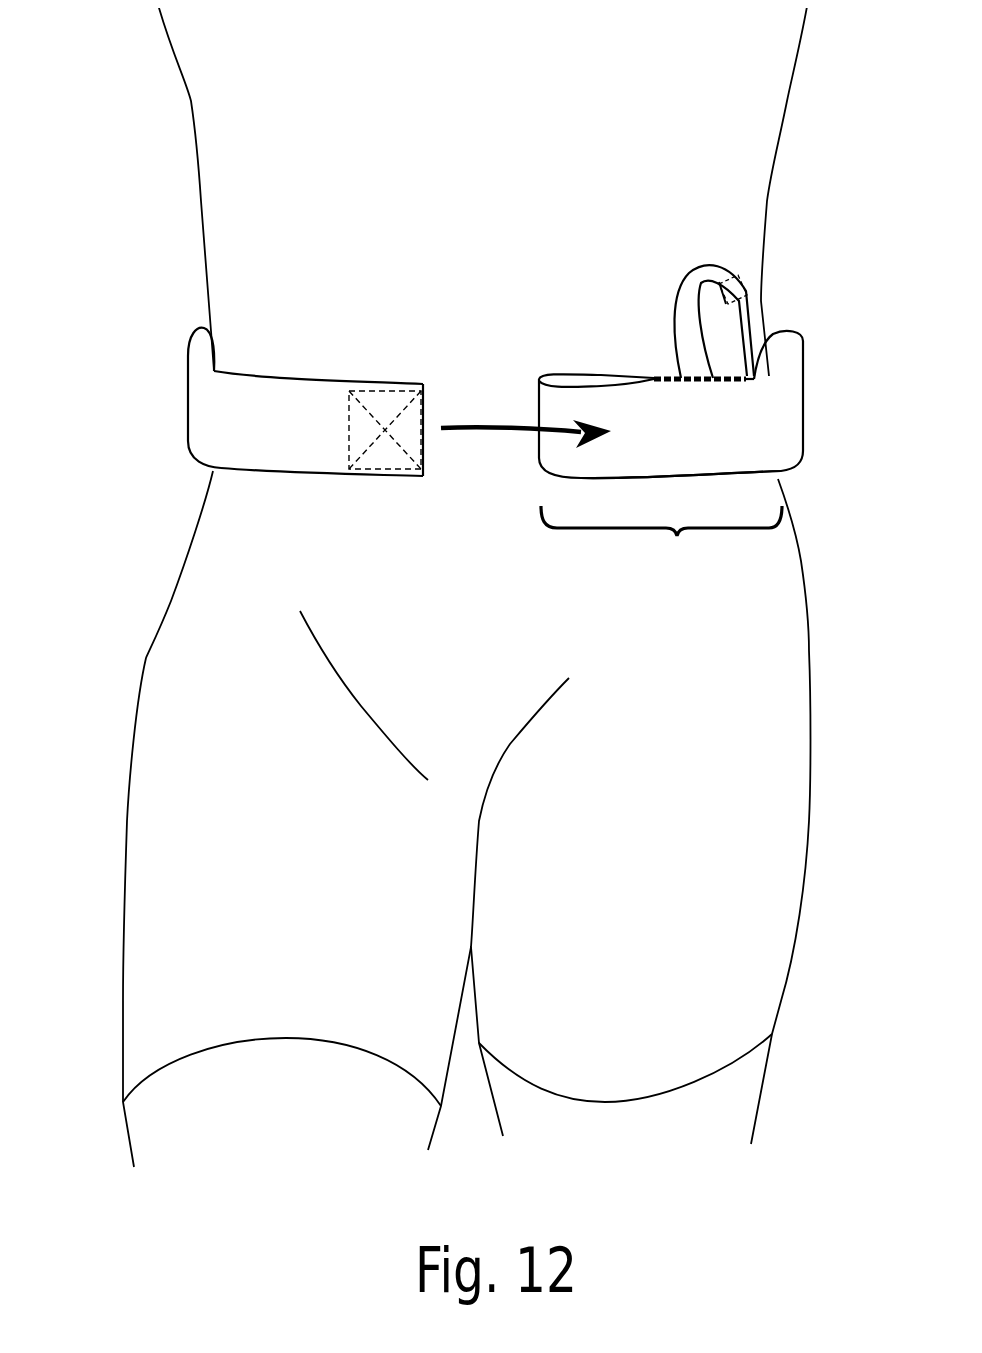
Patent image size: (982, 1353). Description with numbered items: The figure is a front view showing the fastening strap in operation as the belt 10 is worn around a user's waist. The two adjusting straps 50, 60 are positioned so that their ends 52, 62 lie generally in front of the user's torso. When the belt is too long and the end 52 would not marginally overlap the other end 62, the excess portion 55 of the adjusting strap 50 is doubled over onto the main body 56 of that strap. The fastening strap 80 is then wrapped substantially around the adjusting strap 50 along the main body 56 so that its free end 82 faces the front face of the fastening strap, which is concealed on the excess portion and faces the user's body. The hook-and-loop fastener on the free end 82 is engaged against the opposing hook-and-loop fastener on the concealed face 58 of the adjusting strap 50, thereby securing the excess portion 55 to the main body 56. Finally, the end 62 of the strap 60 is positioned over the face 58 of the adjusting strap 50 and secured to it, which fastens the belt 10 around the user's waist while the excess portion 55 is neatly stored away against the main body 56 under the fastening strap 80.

The belt 10 is at (170, 323).
The adjusting strap 50 is at (805, 395).
The end 52 is at (748, 376).
The excess portion 55 is at (661, 547).
The main body 56 is at (680, 470).
The concealed face 58 is at (739, 438).
The belt 60 is at (187, 410).
The end 62 is at (422, 383).
The fastening strap 80 is at (670, 320).
The free end 82 is at (752, 299).